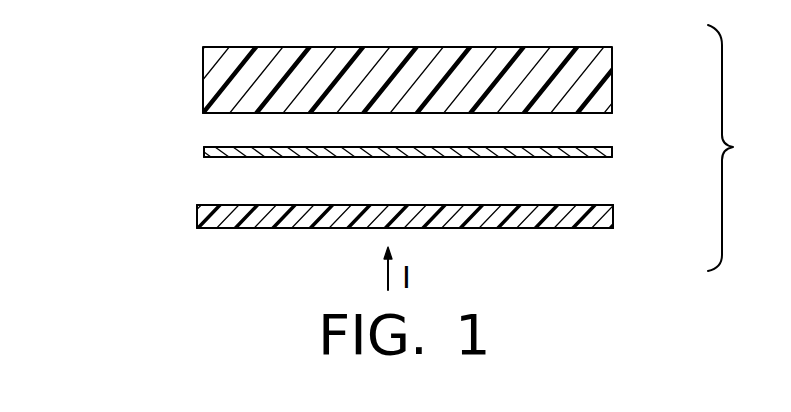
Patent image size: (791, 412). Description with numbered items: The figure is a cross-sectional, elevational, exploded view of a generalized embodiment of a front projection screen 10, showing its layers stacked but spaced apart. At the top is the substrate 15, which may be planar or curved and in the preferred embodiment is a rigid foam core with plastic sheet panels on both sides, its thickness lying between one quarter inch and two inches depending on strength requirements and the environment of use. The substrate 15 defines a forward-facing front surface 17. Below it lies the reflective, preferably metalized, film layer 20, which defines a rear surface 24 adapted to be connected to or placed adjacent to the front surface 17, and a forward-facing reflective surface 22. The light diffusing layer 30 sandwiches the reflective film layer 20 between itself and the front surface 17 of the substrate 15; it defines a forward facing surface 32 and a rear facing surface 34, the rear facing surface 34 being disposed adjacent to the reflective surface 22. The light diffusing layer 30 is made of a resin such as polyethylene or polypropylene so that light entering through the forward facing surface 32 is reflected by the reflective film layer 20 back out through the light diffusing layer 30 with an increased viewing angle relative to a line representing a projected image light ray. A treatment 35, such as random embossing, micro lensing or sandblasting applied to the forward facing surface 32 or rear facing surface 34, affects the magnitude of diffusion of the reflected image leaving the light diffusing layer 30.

The screen 10 is at (128, 81).
The substrate 15 is at (432, 47).
The front surface 17 is at (237, 113).
The reflective film layer 20 is at (612, 152).
The reflective surface 22 is at (582, 157).
The rear surface 24 is at (557, 147).
The light diffusing layer 30 is at (197, 215).
The forward facing surface 32 is at (582, 228).
The rear facing surface 34 is at (248, 205).
The treatment 35 is at (247, 228).